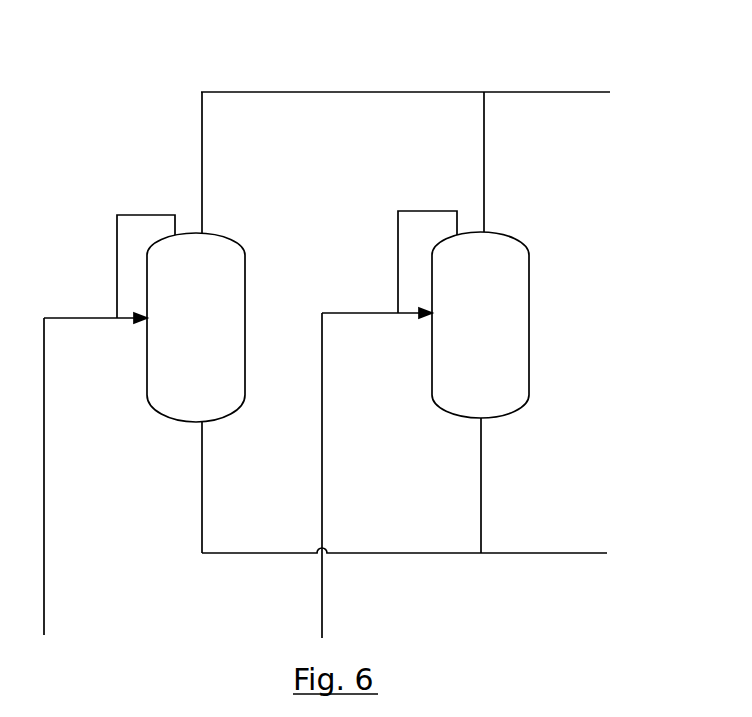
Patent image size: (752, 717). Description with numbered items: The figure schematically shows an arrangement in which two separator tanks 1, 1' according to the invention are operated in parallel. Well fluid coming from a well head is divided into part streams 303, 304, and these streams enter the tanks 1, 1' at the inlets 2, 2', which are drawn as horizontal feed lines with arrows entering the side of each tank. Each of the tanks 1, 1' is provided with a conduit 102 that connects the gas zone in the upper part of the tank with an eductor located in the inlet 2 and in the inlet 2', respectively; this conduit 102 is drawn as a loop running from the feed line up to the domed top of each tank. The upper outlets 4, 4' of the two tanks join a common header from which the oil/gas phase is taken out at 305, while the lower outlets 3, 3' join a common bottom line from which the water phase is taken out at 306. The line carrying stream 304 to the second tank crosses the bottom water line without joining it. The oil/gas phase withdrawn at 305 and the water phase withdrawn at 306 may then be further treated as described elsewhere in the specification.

The tank 1 is at (223, 312).
The tank 1' is at (522, 313).
The inlet 2 is at (95, 275).
The inlet 2' is at (377, 270).
The bottom outlet of first reactor 3 is at (226, 487).
The bottom outlet of second reactor 3' is at (507, 485).
The top outlet of first reactor 4 is at (223, 162).
The top outlet of second reactor 4' is at (507, 162).
The conduit 102 is at (136, 234).
The well fluid stream 303 is at (82, 330).
The well fluid stream 304 is at (322, 468).
The oil/gas phase outlet 305 is at (578, 89).
The water phase outlet 306 is at (557, 553).